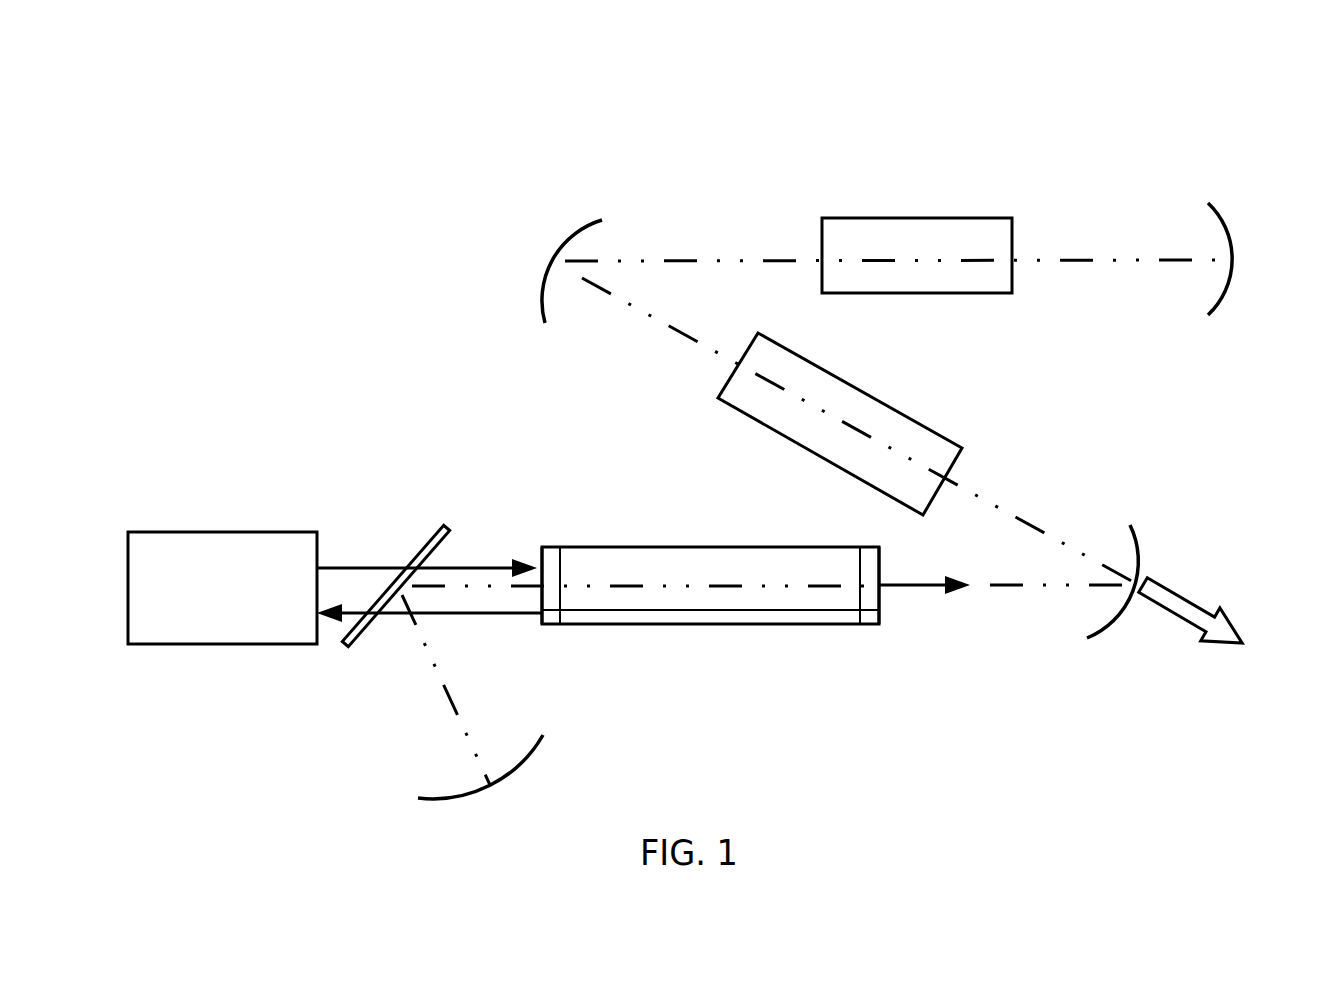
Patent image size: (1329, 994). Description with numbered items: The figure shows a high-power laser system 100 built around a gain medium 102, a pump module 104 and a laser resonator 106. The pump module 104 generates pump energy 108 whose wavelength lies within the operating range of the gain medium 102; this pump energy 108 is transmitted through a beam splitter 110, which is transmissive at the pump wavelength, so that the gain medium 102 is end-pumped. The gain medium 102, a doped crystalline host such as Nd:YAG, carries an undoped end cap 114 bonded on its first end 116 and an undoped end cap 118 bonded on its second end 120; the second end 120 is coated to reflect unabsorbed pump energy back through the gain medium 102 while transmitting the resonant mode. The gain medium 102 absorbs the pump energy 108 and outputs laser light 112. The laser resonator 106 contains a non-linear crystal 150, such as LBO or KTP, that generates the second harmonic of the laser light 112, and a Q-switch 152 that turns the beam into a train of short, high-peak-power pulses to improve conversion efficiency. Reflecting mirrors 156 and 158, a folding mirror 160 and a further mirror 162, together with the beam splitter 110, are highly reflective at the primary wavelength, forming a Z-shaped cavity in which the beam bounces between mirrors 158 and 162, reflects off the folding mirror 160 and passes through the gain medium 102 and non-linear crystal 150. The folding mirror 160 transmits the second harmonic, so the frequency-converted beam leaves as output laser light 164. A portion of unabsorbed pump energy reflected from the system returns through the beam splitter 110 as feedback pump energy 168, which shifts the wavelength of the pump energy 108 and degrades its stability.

The high-power laser system 100 is at (318, 186).
The gain medium 102 is at (730, 547).
The pump module 104 is at (203, 532).
The laser resonator 106 is at (482, 348).
The pump energy 108 is at (497, 565).
The beam splitter 110 is at (430, 527).
The laser light 112 is at (955, 592).
The undoped end cap 114 is at (552, 624).
The first end 116 is at (550, 547).
The undoped end cap 118 is at (870, 624).
The second end 120 is at (870, 547).
The non-linear crystal 150 is at (898, 218).
The Q-switch 152 is at (922, 418).
The reflecting mirror 156 is at (573, 237).
The reflecting mirror 158 is at (1225, 297).
The folding mirror 160 is at (1105, 628).
The mirror 162 is at (523, 765).
The output laser light 164 is at (1190, 598).
The feedback pump energy 168 is at (343, 616).